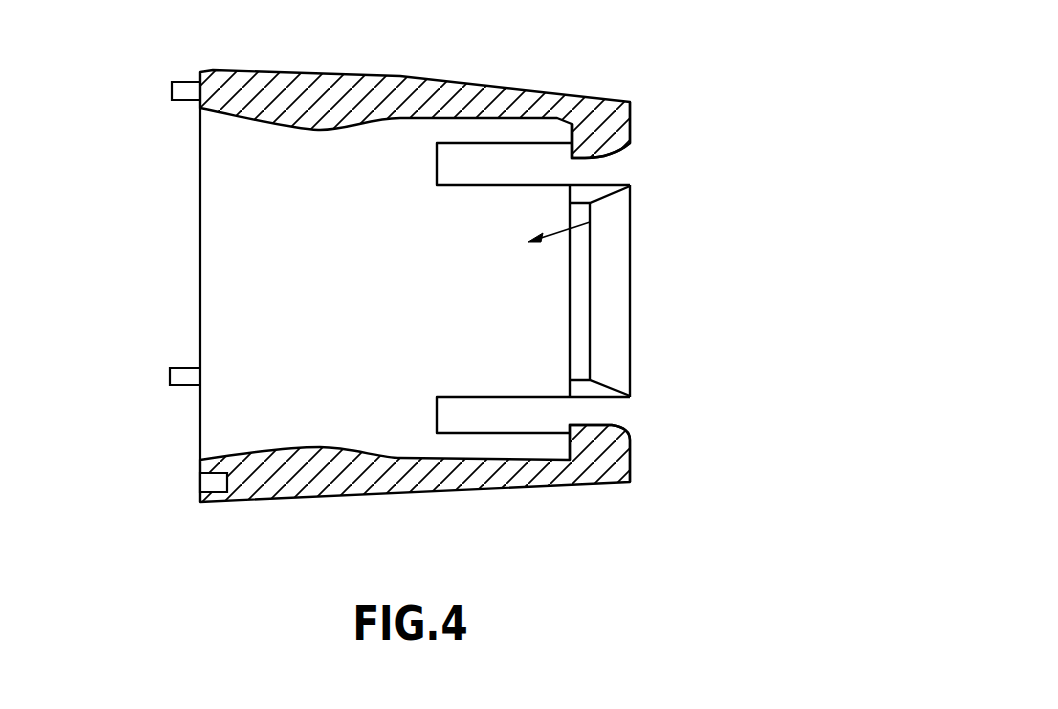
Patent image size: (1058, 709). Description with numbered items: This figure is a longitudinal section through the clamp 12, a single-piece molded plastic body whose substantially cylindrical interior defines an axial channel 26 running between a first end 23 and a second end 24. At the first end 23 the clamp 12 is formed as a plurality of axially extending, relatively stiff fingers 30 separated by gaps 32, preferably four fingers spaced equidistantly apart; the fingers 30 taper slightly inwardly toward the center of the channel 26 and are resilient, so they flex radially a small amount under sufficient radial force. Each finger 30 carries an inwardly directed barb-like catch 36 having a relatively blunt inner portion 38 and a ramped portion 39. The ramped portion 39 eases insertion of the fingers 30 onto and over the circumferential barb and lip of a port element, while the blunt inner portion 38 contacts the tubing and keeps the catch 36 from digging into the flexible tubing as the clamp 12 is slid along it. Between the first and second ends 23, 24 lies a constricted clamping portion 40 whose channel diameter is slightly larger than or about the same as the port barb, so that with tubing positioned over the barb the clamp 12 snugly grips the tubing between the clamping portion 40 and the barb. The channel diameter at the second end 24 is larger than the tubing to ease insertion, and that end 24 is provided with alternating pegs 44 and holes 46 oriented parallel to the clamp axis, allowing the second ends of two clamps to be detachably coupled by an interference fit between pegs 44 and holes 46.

The clamp 12 is at (366, 76).
The first end 23 is at (633, 115).
The second end 24 is at (198, 106).
The axial channel 26 is at (600, 222).
The fingers 30 is at (630, 147).
The gaps 32 is at (517, 160).
The catch 36 is at (541, 109).
The blunt inner portion 38 is at (601, 162).
The ramped portion 39 is at (633, 440).
The clamping portion 40 is at (341, 446).
The pegs 44 is at (171, 92).
The holes 46 is at (204, 479).